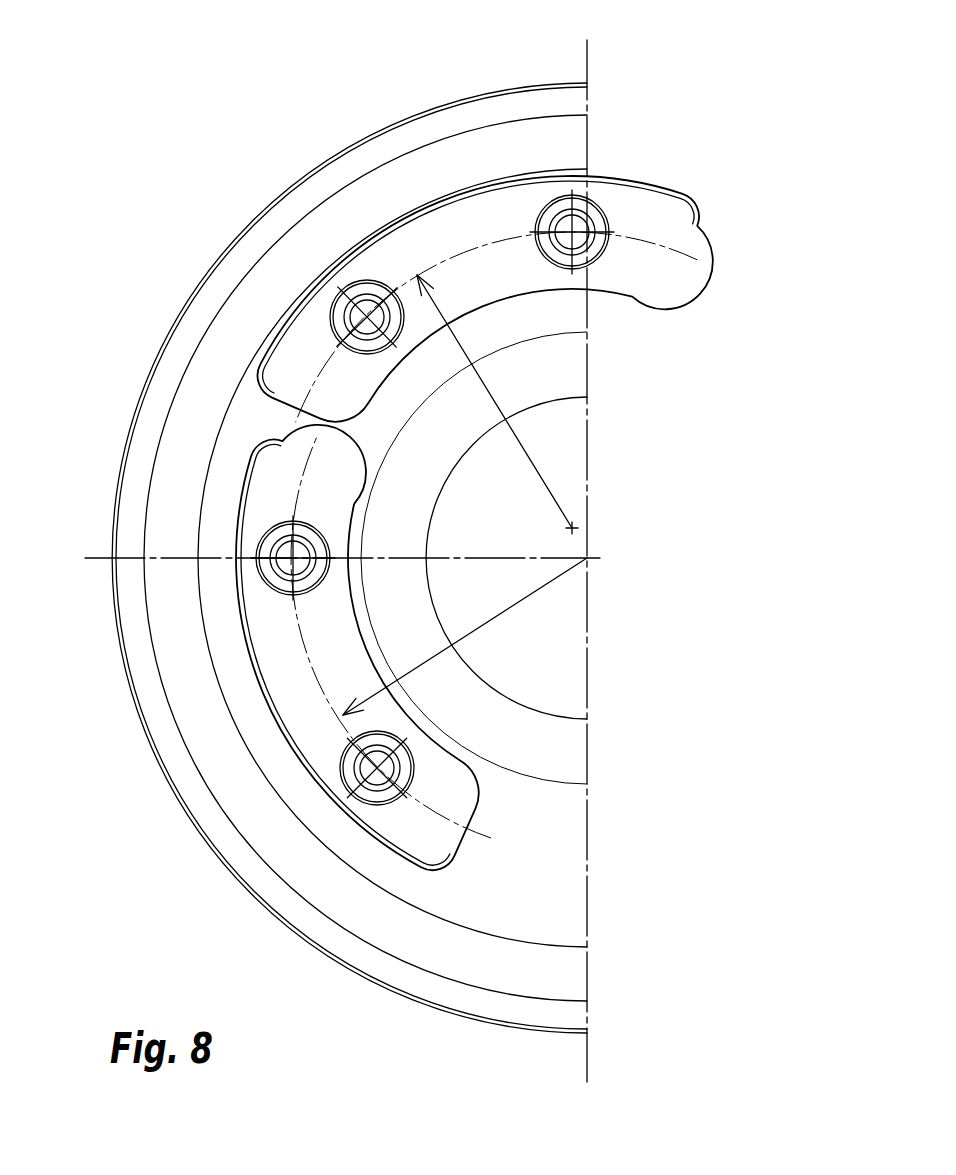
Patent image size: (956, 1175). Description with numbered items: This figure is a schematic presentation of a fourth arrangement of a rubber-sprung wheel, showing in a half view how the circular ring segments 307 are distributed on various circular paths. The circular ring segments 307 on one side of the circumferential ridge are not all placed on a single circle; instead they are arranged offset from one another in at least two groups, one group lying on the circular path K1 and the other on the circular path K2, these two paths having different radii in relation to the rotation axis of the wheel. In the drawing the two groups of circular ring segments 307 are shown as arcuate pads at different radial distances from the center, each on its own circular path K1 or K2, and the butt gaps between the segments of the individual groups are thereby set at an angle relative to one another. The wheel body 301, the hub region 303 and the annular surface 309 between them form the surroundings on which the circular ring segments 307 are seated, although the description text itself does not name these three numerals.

The brake disc body 301 is at (518, 147).
The hub 303 is at (553, 374).
The circular ring segments 307 is at (440, 232).
The annular friction surface 309 is at (258, 422).
The circular path K1 is at (492, 835).
The circular path K2 is at (312, 380).